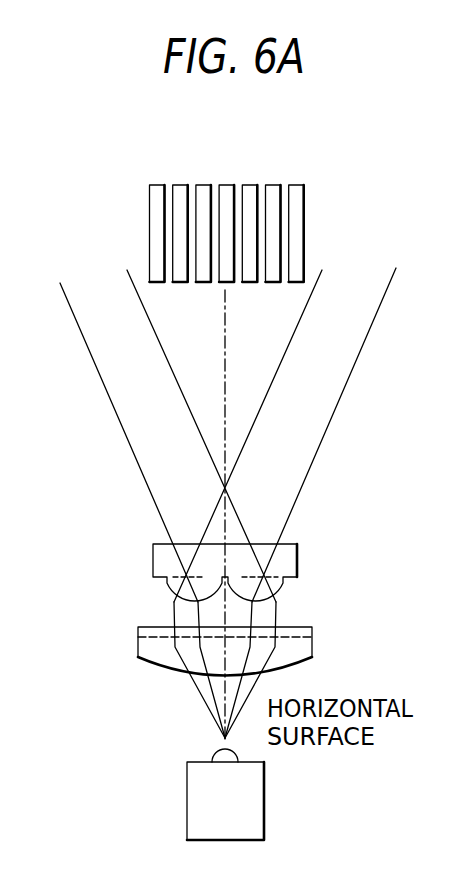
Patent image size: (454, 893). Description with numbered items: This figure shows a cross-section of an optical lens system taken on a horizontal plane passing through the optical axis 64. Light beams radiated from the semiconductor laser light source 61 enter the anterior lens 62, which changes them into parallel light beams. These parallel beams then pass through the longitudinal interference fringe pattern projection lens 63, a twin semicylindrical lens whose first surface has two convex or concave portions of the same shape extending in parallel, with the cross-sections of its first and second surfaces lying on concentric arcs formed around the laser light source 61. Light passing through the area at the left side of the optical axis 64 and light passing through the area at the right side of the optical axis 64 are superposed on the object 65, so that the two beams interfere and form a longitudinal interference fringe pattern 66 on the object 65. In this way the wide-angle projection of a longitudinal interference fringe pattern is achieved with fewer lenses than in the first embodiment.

The semiconductor laser light source 61 is at (187, 798).
The anterior lens 62 is at (138, 643).
The longitudinal interference fringe pattern projection lens 63 is at (153, 560).
The optical axis 64 is at (226, 307).
The object 65 is at (278, 203).
The pattern bar 66 is at (227, 176).